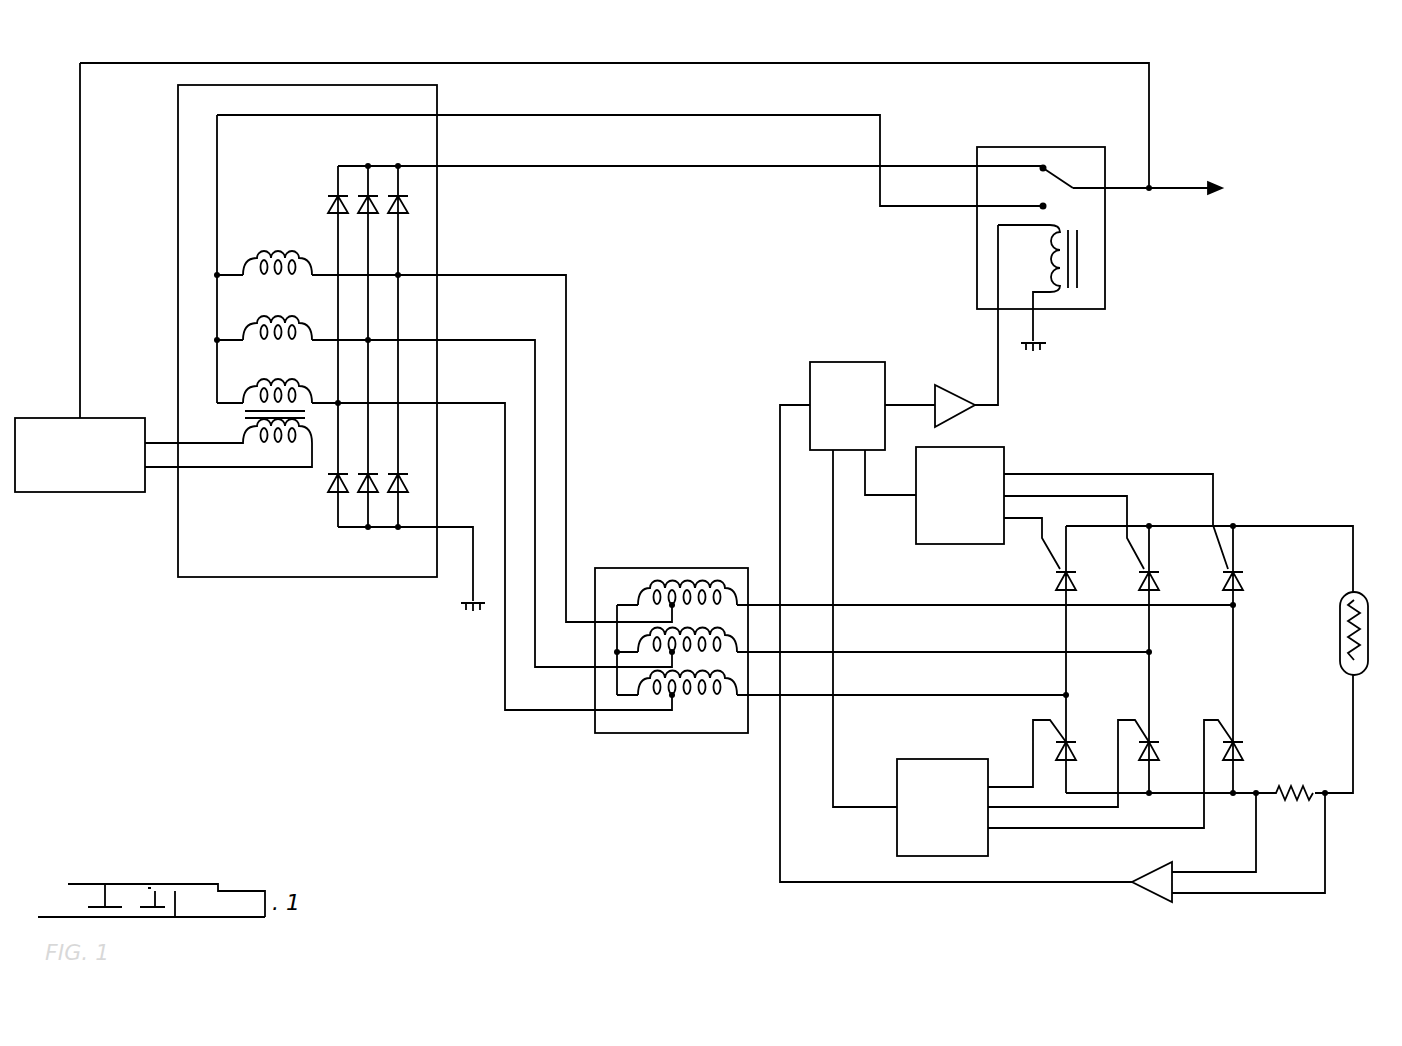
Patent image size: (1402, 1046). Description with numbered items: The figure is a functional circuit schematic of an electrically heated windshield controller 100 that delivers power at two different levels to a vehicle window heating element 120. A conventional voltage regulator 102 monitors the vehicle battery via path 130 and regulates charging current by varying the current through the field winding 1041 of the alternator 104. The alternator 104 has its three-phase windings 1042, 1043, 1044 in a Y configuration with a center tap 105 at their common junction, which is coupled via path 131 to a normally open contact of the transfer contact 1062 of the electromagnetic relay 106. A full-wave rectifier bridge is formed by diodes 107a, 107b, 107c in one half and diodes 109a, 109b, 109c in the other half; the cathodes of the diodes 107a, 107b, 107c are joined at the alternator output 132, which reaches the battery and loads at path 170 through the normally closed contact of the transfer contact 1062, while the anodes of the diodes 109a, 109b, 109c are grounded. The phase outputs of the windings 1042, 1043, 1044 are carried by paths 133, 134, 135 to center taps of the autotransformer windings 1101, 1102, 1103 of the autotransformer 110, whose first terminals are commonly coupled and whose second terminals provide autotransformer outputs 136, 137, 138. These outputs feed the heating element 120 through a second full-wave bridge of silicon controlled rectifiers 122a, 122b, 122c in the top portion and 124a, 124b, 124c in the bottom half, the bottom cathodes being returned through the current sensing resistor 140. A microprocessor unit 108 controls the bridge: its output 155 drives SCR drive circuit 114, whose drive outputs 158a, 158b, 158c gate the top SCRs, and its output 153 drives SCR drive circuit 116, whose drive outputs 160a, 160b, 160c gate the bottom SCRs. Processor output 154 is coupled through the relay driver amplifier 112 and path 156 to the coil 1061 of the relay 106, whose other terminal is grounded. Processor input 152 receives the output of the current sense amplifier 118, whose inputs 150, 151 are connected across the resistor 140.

The electrically heated windshield controller 100 is at (386, 676).
The voltage regulator 102 is at (72, 482).
The alternator 104 is at (278, 578).
The center tap 105 is at (217, 340).
The electromagnetic relay 106 is at (1023, 147).
The diode 107a is at (330, 200).
The diode 107b is at (374, 195).
The diode 107c is at (408, 207).
The microprocessor unit 108 is at (822, 362).
The diode 109a is at (330, 492).
The diode 109b is at (362, 493).
The diode 109c is at (410, 485).
The autotransformer 110 is at (595, 720).
The relay driver amplifier 112 is at (960, 395).
The SCR drive circuit 114 is at (930, 546).
The SCR drive circuit 116 is at (897, 838).
The current sense amplifier 118 is at (1143, 892).
The window heating element 120 is at (1335, 633).
The silicon controlled rectifier 122a is at (1082, 582).
The silicon controlled rectifier 122b is at (1165, 582).
The silicon controlled rectifier 122c is at (1245, 588).
The silicon controlled rectifier 124a is at (1082, 745).
The silicon controlled rectifier 124b is at (1165, 745).
The silicon controlled rectifier 124c is at (1245, 754).
The path 130 is at (882, 67).
The path 131 is at (736, 88).
The alternator output 132 is at (728, 168).
The path 133 is at (566, 330).
The path 134 is at (535, 418).
The path 135 is at (505, 700).
The autotransformer output 136 is at (918, 608).
The autotransformer output 137 is at (880, 654).
The autotransformer output 138 is at (984, 697).
The current sensing resistor 140 is at (1290, 800).
The input 150 is at (1325, 845).
The input 151 is at (1190, 888).
The processor input 152 is at (780, 880).
The output 153 is at (833, 735).
The processor output 154 is at (905, 400).
The output 155 is at (885, 497).
The path 156 is at (998, 400).
The drive output 158a is at (1022, 520).
The drive output 158b is at (1075, 462).
The drive output 158c is at (1165, 478).
The drive output 160a is at (1005, 783).
The drive output 160b is at (1008, 810).
The drive output 160c is at (1083, 835).
The path 170 is at (1185, 186).
The field winding 1041 is at (268, 448).
The three-phase winding 1042 is at (255, 258).
The three-phase winding 1043 is at (296, 324).
The three-phase winding 1044 is at (296, 387).
The coil 1061 is at (1042, 262).
The transfer contact 1062 is at (1045, 190).
The autotransformer winding 1101 is at (648, 588).
The autotransformer winding 1102 is at (732, 632).
The autotransformer winding 1103 is at (707, 700).